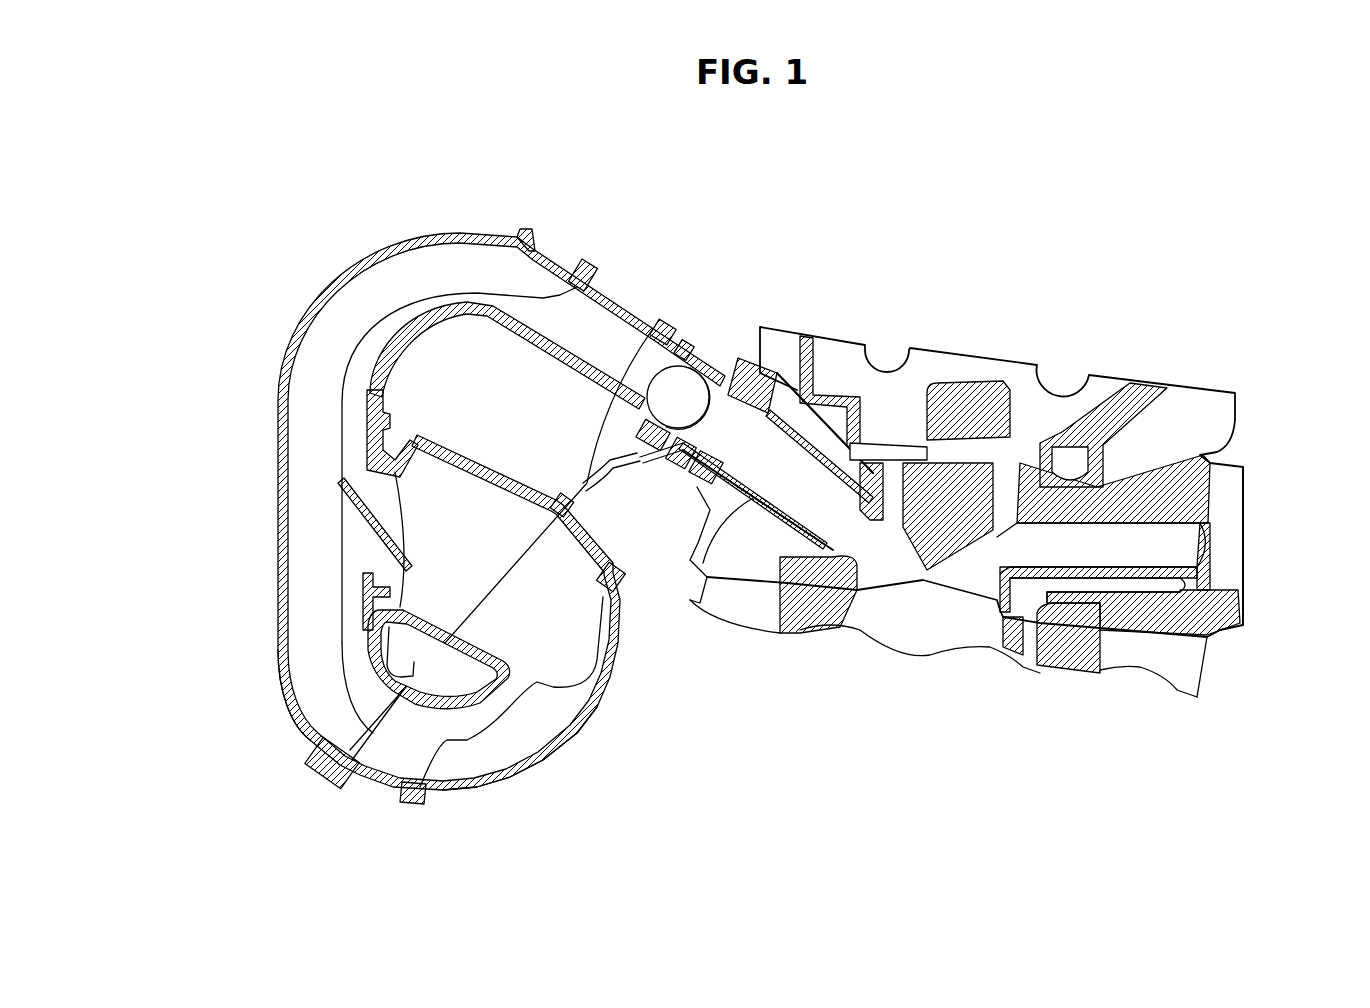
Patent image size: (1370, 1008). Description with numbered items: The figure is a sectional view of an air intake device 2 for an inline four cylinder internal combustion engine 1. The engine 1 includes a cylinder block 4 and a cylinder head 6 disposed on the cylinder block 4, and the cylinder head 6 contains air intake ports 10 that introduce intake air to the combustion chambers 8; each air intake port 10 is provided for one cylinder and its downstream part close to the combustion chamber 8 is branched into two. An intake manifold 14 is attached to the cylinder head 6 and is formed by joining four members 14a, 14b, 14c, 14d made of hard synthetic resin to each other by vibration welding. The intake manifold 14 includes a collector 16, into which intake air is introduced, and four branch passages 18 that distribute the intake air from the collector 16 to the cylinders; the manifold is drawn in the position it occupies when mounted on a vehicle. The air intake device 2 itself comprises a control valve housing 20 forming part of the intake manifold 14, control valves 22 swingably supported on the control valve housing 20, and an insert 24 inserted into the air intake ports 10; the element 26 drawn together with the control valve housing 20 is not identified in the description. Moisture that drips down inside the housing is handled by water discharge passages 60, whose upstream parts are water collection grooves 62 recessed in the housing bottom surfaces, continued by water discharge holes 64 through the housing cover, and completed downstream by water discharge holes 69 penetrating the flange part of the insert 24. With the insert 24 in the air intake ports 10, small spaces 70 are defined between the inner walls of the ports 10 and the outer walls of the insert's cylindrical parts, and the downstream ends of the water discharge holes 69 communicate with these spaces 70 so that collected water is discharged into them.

The internal combustion engine 1 is at (1137, 313).
The air intake device 2 is at (621, 377).
The cylinder block 4 is at (1197, 697).
The cylinder head 6 is at (1247, 517).
The combustion chambers 8 is at (880, 625).
The air intake ports 10 is at (785, 636).
The intake manifold 14 is at (432, 237).
The member 14a is at (522, 776).
The member 14b is at (378, 763).
The member 14c is at (343, 745).
The member 14d is at (310, 677).
The collector 16 is at (567, 673).
The branch passages 18 is at (487, 753).
The control valve housing 20 is at (534, 300).
The control valves 22 is at (688, 388).
The insert 24 is at (760, 385).
The inner pipe wall 26 is at (667, 330).
The water discharge passages 60 is at (653, 488).
The water collection groove 62 is at (637, 430).
The water discharge holes 64 is at (660, 457).
The water discharge holes 69 is at (681, 478).
The spaces 70 is at (715, 602).